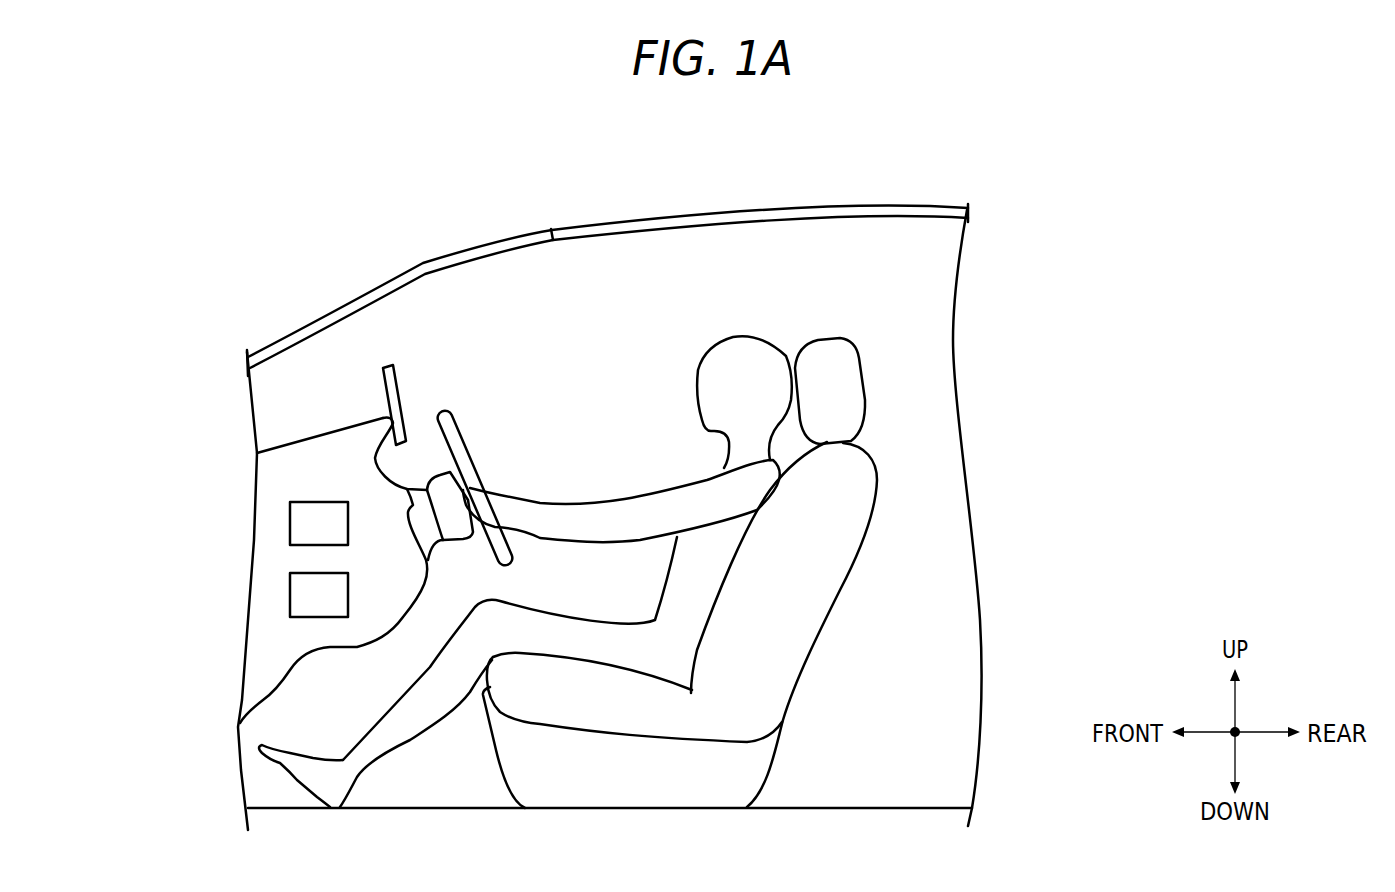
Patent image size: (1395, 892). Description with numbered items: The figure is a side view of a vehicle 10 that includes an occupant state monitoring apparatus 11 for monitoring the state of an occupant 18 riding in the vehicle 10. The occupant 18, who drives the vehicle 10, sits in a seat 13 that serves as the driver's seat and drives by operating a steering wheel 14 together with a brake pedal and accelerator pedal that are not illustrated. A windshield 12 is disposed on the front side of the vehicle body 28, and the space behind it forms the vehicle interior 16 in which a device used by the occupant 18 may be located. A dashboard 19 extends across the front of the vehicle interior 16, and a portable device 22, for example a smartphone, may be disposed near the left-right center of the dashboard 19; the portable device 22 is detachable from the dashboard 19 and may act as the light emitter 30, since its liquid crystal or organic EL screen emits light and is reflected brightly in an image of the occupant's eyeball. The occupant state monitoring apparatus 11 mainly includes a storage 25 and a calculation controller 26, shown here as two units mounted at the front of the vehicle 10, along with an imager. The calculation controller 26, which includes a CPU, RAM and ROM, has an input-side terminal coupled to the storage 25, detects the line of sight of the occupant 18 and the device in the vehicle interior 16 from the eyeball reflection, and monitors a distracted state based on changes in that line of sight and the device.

The vehicle 10 is at (672, 197).
The occupant state monitoring apparatus 11 is at (427, 265).
The windshield 12 is at (352, 306).
The seat 13 is at (827, 338).
The steering wheel 14 is at (447, 410).
The vehicle interior 16 is at (580, 297).
The occupant 18 is at (732, 352).
The dashboard 19 is at (297, 440).
The portable device 22 is at (393, 365).
The storage 25 is at (288, 600).
The calculation controller 26 is at (288, 528).
The vehicle body 28 is at (497, 233).
The light emitter 30 is at (744, 402).